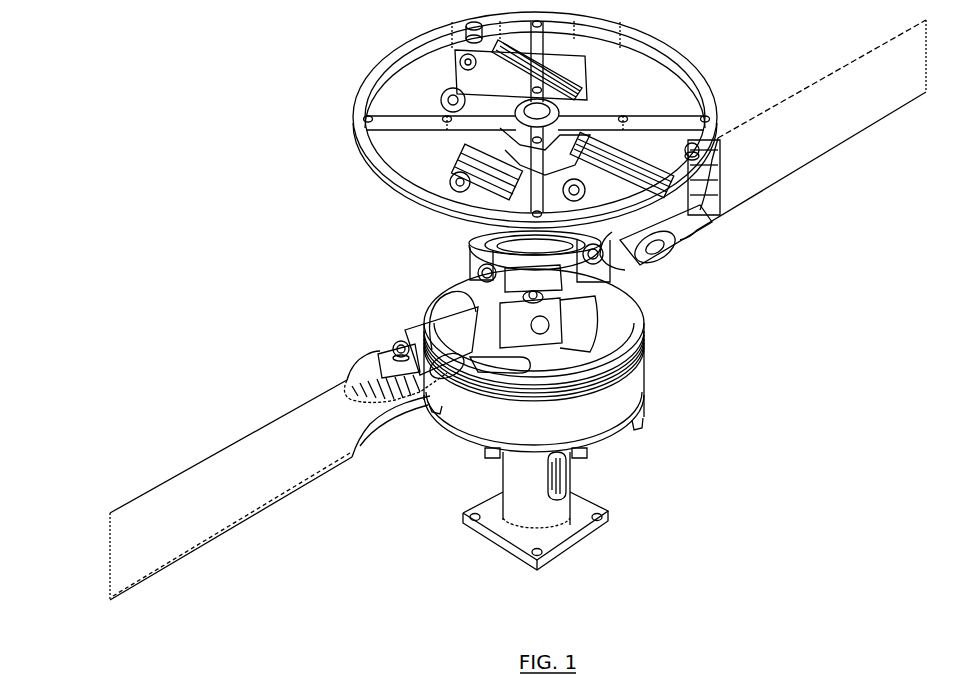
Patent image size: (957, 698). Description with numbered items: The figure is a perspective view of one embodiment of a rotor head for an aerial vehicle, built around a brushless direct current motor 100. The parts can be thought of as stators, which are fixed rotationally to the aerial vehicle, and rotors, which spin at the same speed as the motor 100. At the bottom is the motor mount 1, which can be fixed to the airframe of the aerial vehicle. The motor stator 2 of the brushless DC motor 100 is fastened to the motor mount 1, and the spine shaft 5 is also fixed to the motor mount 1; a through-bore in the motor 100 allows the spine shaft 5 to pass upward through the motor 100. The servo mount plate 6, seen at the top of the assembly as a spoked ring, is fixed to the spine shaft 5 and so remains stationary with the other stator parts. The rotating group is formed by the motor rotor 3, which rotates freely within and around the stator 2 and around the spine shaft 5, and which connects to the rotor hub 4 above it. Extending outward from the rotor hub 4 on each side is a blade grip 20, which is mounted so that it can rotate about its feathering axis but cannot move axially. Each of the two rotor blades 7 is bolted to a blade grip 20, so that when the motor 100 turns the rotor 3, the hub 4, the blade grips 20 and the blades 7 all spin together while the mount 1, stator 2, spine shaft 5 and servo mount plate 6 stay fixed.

The brushless direct current motor 100 is at (557, 444).
The motor mount 1 is at (608, 533).
The motor stator 2 is at (648, 428).
The motor rotor 3 is at (658, 378).
The rotor hub 4 is at (570, 312).
The spine shaft 5 is at (545, 277).
The servo mount plate 6 is at (355, 97).
The rotor blades 7 is at (785, 180).
The blade grip 20 is at (410, 330).